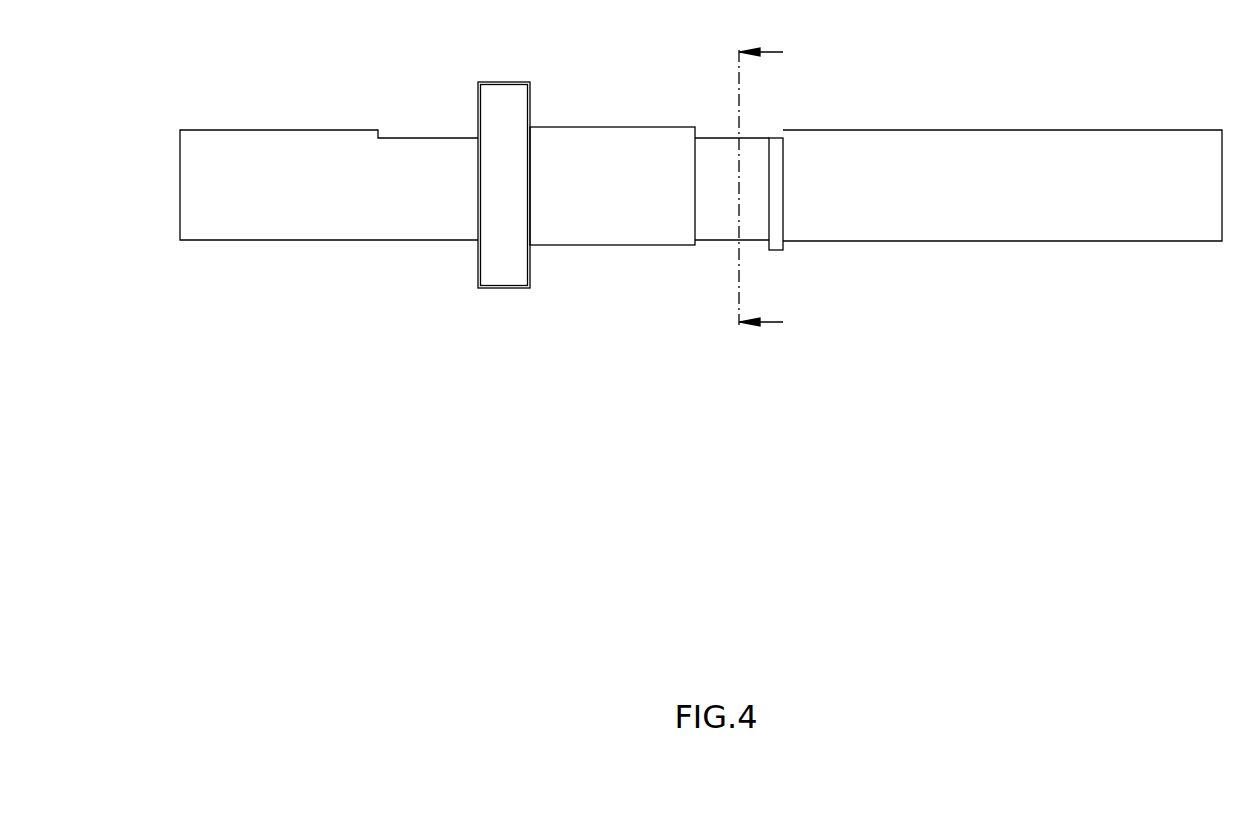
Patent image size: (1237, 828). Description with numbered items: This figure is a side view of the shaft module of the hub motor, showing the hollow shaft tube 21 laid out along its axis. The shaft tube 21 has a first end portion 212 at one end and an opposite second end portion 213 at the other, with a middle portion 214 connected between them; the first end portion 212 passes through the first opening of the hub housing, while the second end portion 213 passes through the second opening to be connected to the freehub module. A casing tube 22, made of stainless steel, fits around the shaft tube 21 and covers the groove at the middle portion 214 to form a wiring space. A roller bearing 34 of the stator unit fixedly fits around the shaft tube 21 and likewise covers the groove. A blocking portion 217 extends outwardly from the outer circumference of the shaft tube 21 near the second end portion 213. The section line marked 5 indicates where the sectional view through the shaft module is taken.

The shaft tube 21 is at (699, 178).
The first end portion 212 is at (207, 220).
The casing tube 22 is at (641, 145).
The middle portion 214 is at (823, 217).
The blocking portion 217 is at (775, 197).
The second end portion 213 is at (1187, 225).
The roller bearing 34 is at (502, 107).
The reduction gear set 5 is at (774, 186).